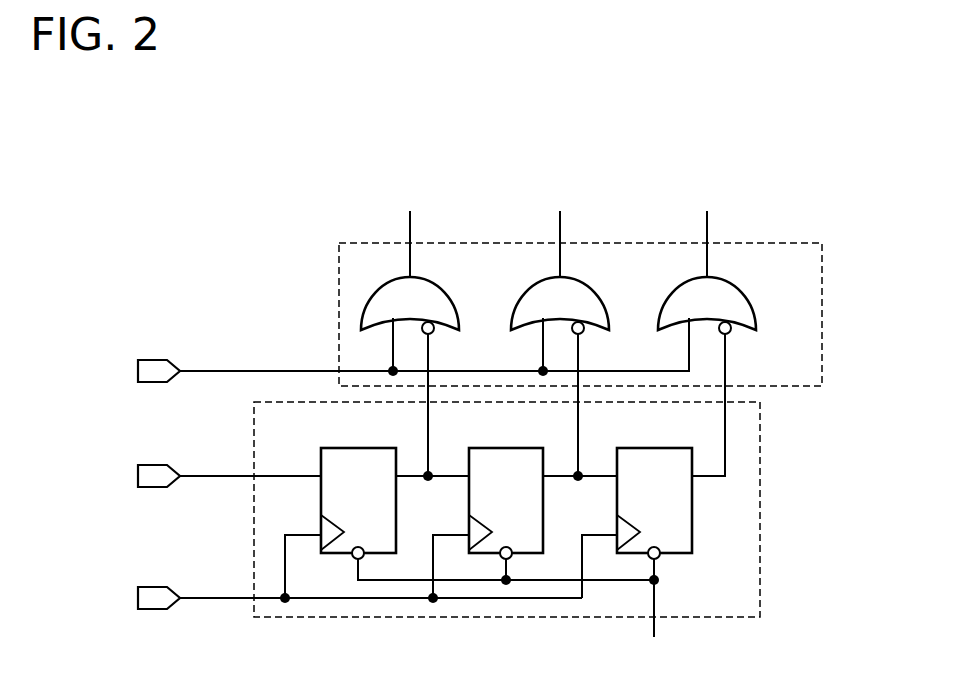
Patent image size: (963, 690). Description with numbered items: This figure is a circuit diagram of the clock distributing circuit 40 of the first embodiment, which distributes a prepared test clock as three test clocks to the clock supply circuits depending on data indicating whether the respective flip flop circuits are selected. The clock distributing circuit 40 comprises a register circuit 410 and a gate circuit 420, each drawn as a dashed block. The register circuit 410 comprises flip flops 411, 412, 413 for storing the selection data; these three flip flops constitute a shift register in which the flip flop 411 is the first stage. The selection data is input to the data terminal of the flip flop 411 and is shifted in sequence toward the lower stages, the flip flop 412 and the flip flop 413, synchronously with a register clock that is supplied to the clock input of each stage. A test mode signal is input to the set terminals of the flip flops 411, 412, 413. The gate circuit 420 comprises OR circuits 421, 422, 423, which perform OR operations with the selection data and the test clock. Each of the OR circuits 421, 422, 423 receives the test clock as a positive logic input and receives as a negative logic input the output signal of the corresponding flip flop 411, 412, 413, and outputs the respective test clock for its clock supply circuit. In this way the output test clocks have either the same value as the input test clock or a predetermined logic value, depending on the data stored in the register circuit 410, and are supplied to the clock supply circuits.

The clock distributing circuit 40 is at (283, 238).
The register circuit 410 is at (760, 556).
The flip flop 411 is at (321, 462).
The flip flop 412 is at (519, 448).
The flip flop 413 is at (676, 554).
The gate circuit 420 is at (800, 386).
The OR circuit 421 is at (458, 311).
The OR circuit 422 is at (608, 311).
The OR circuit 423 is at (755, 311).